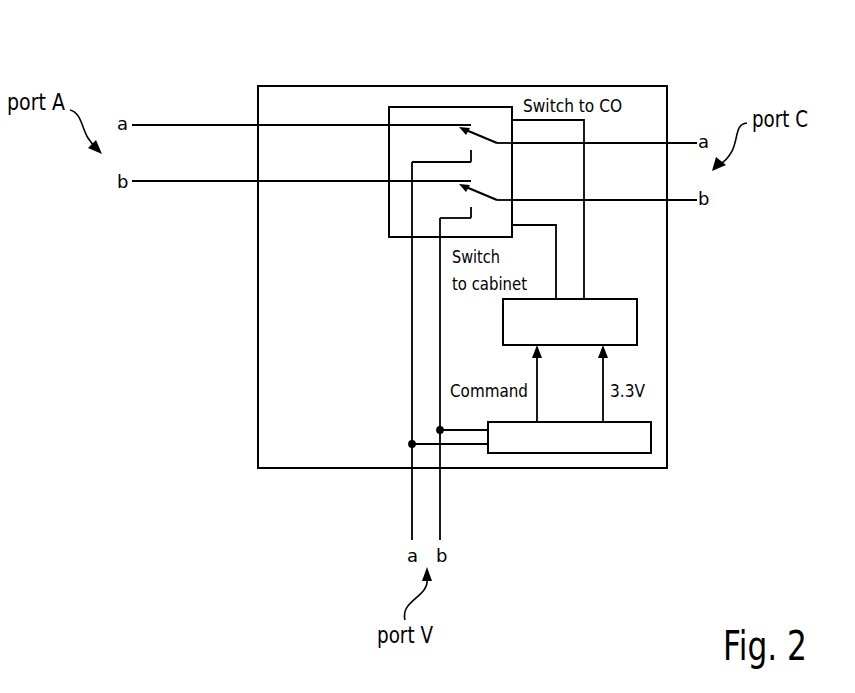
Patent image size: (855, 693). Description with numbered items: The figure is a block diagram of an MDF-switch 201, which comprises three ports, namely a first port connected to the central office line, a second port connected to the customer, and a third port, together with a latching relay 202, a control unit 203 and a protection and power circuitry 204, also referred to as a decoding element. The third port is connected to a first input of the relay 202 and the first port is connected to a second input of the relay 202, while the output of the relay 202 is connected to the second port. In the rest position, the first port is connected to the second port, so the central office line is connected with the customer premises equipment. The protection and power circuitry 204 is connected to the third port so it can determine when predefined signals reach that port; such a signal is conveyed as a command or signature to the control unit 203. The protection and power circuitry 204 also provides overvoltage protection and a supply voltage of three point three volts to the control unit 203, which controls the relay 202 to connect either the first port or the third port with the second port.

The MDF-switch 201 is at (344, 86).
The latching relay 202 is at (440, 107).
The control unit 203 is at (637, 324).
The protection and power circuitry 204 is at (651, 441).